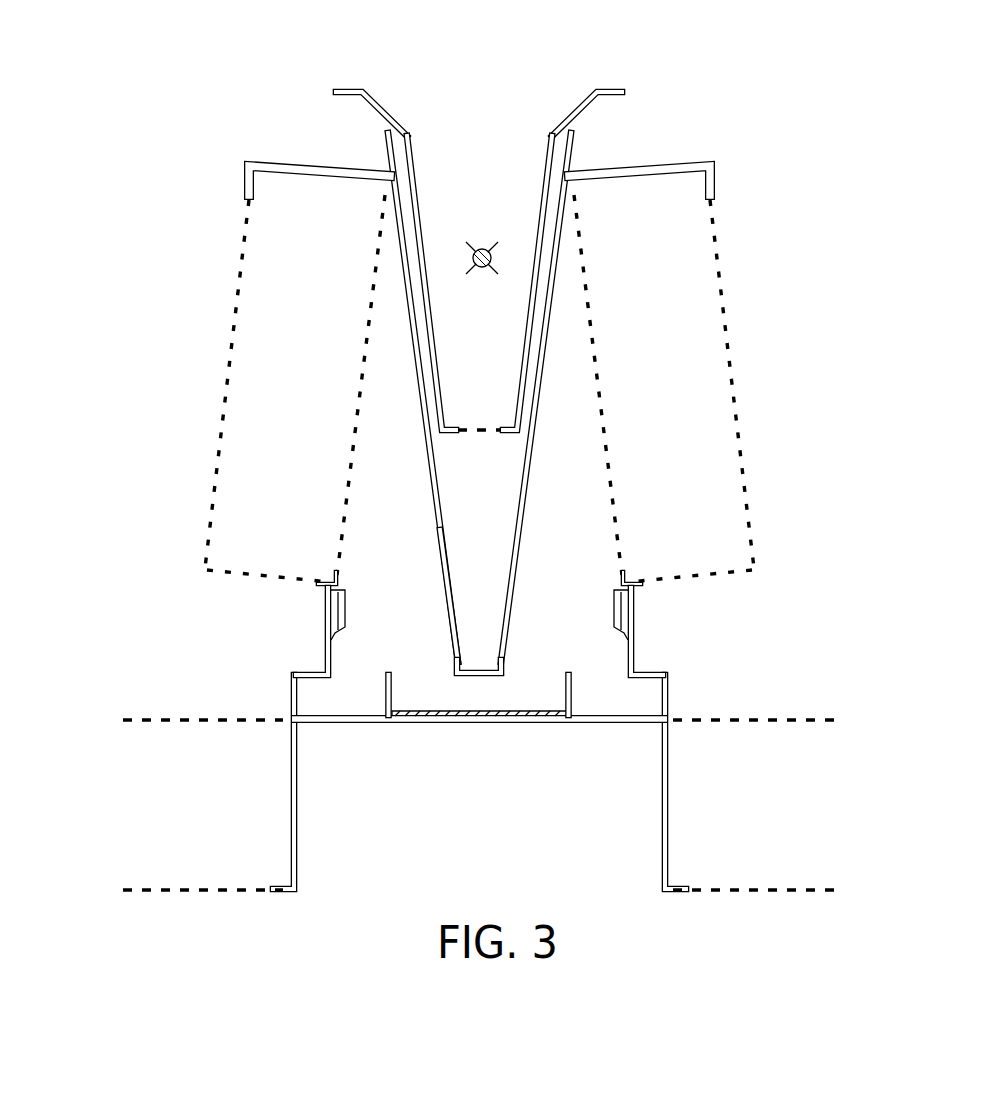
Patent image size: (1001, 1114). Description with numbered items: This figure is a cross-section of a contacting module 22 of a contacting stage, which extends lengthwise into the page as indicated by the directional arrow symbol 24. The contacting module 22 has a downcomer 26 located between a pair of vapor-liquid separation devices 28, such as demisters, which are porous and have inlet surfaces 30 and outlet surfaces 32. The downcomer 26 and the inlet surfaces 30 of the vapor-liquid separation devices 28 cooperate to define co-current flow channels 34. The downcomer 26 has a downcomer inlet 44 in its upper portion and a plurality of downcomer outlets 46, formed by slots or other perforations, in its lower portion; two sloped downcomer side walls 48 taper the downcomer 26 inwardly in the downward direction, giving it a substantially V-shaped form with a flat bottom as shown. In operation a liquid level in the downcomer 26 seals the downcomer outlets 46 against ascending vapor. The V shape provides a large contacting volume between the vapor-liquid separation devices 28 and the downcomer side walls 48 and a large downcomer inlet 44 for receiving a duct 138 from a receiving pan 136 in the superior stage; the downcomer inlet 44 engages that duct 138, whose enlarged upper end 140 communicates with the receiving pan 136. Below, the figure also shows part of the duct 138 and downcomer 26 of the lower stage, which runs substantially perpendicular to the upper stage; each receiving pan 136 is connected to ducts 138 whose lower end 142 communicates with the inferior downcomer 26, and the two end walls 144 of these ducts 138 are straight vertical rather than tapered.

The contacting module 22 is at (770, 76).
The directional arrow symbol 24 is at (481, 244).
The downcomer 26 is at (561, 228).
The vapor-liquid separation device 28 is at (492, 389).
The inlet surface 30 is at (582, 300).
The outlet surface 32 is at (721, 312).
The co-current flow channel 34 is at (580, 475).
The downcomer inlet 44 is at (560, 152).
The downcomer outlet 46 is at (502, 664).
The downcomer side wall 48 is at (532, 480).
The receiving pan 136 is at (632, 657).
The duct 138 is at (548, 167).
The enlarged upper end 140 is at (577, 110).
The lower end 142 is at (506, 425).
The end wall 144 is at (667, 697).